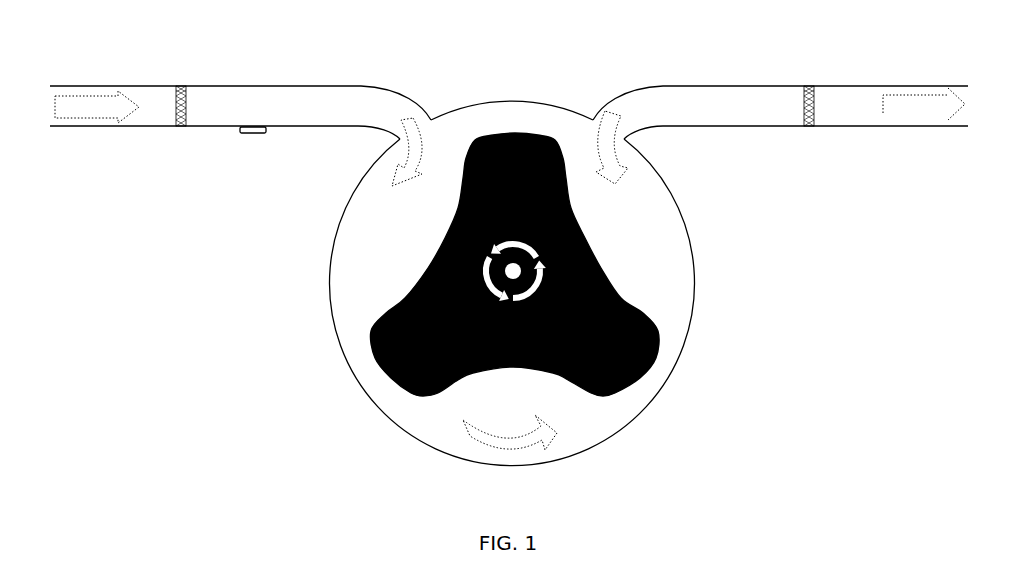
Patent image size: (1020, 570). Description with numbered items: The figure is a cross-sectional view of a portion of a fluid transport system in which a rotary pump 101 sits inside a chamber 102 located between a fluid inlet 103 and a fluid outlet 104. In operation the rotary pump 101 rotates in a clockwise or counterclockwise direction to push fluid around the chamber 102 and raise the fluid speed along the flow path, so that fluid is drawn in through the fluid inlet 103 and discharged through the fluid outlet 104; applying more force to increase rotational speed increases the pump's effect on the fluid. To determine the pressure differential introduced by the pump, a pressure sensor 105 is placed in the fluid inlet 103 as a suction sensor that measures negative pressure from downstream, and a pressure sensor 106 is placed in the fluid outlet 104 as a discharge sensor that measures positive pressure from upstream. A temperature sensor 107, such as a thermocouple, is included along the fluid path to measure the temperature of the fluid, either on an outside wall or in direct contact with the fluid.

The rotary pump 101 is at (633, 367).
The chamber 102 is at (338, 303).
The fluid inlet 103 is at (308, 90).
The fluid outlet 104 is at (670, 85).
The pressure sensor 105 is at (170, 120).
The pressure sensor 106 is at (800, 119).
The temperature sensor 107 is at (241, 126).